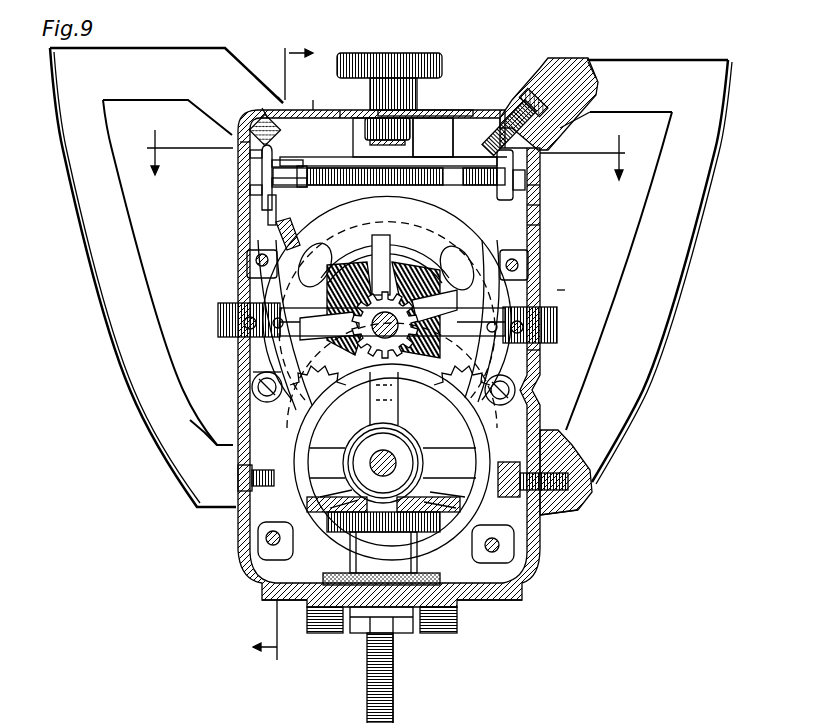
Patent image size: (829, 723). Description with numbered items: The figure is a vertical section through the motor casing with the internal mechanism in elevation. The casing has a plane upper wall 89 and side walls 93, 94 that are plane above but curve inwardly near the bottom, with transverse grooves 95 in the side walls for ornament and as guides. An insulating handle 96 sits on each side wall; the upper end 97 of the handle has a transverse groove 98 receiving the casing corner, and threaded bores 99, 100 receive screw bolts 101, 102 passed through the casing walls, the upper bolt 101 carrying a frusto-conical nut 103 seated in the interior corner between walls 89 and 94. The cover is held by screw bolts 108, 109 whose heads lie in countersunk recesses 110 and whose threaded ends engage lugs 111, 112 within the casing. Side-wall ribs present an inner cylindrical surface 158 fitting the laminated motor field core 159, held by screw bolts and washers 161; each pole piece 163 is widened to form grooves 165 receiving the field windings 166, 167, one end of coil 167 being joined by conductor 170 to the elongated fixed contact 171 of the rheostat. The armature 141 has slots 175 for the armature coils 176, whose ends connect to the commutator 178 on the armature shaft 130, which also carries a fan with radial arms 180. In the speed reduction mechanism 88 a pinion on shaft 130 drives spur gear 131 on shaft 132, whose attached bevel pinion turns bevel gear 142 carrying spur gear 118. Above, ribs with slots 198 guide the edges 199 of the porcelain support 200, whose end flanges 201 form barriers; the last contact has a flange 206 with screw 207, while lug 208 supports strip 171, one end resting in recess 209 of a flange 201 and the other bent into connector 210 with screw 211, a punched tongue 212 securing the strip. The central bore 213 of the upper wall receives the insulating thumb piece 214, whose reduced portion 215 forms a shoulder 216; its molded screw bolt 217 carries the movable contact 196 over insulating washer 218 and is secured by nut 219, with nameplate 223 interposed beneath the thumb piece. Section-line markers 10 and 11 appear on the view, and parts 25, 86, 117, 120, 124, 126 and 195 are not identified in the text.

The section line 10- 10 is at (387, 155).
The section line 11- 11 is at (283, 353).
The clamping nut 25 is at (310, 618).
The adjusting knob 86 is at (557, 325).
The speed reduction mechanism 88 is at (530, 538).
The upper wall 89 is at (278, 97).
The side wall 93 is at (233, 424).
The side wall 94 is at (540, 433).
The transversely extending grooves 95 is at (250, 370).
The handle 96 is at (117, 322).
The upper end of handle 97 is at (262, 85).
The transverse groove 98 is at (562, 60).
The threaded bore 99 is at (596, 80).
The threaded bore 100 is at (592, 470).
The screw bolt 101 is at (575, 125).
The screw bolt 102 is at (578, 512).
The frusto-conical nut 103 is at (500, 108).
The screw bolt 108 is at (265, 545).
The screw bolt 109 is at (520, 268).
The countersunk recesses 110 is at (240, 520).
The lug 111 is at (272, 556).
The lug 112 is at (460, 615).
The shaft 117 is at (365, 660).
The spur gear 118 is at (272, 585).
The bearing 120 is at (540, 350).
The shaft end 124 is at (450, 640).
The nut 126 is at (355, 630).
The armature shaft 130 is at (440, 437).
The spur gear 131 is at (225, 445).
The shaft 132 is at (396, 462).
The motor armature 141 is at (250, 268).
The bevel gear 142 is at (240, 490).
The inner cylindrical surface 158 is at (565, 290).
The motor field core 159 is at (545, 310).
The screw bolts and washers 161 is at (330, 437).
The pole piece 163 is at (387, 301).
The grooves 165 is at (480, 178).
The field winding 166 is at (258, 292).
The field winding 167 is at (323, 467).
The conductor 170 is at (256, 258).
The elongated metal strip 171 is at (262, 112).
The slots 175 is at (410, 262).
The armature coils 176 is at (245, 318).
The commutator 178 is at (355, 248).
The radially extending arms 180 is at (252, 373).
The link 195 is at (275, 198).
The movable contact 196 is at (368, 120).
The longitudinal slots 198 is at (540, 205).
The edges 199 is at (540, 188).
The insulating support 200 is at (262, 172).
The flanges 201 is at (257, 162).
The metal flange 206 is at (535, 232).
The screw 207 is at (535, 245).
The upwardly projecting lug 208 is at (240, 142).
The recess 209 is at (478, 125).
The connector 210 is at (270, 190).
The screw 211 is at (270, 200).
The punched tongue 212 is at (252, 120).
The bore 213 is at (437, 108).
The insulating thumb piece 214 is at (403, 76).
The portion of reduced diameter 215 is at (378, 100).
The shoulder 216 is at (400, 100).
The screw bolt 217 is at (378, 172).
The insulating washer 218 is at (443, 115).
The nut 219 is at (410, 140).
The nameplate 223 is at (313, 105).